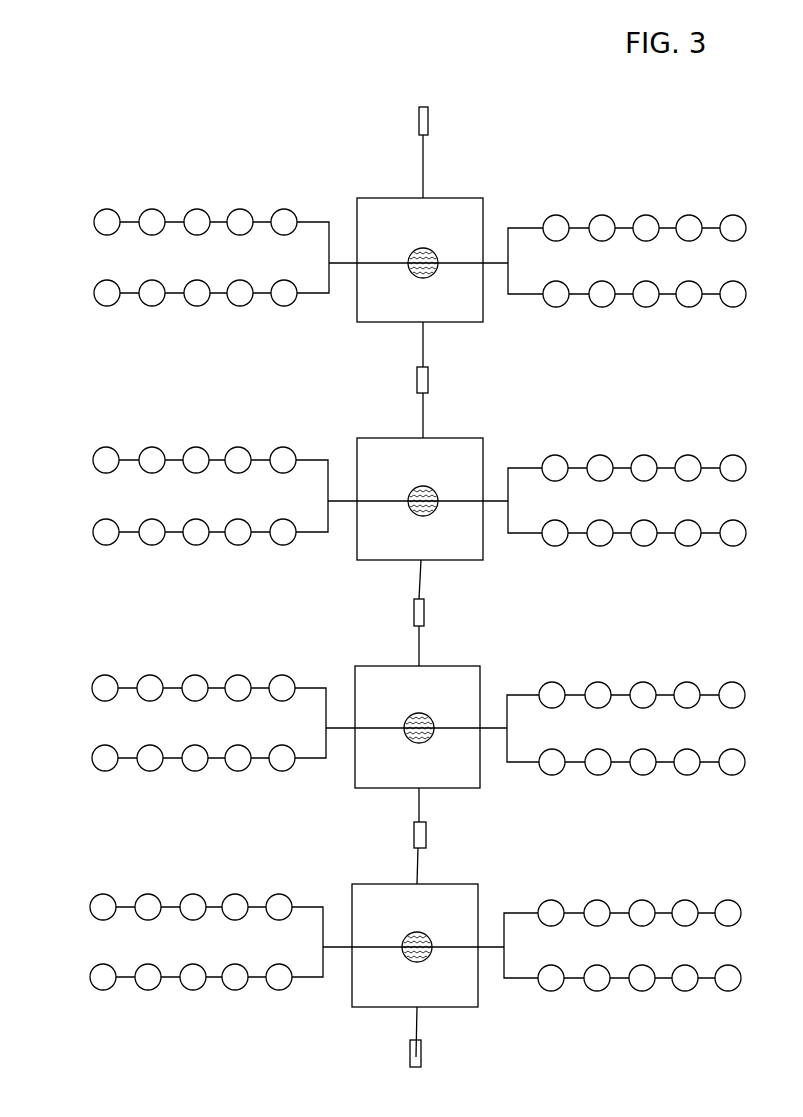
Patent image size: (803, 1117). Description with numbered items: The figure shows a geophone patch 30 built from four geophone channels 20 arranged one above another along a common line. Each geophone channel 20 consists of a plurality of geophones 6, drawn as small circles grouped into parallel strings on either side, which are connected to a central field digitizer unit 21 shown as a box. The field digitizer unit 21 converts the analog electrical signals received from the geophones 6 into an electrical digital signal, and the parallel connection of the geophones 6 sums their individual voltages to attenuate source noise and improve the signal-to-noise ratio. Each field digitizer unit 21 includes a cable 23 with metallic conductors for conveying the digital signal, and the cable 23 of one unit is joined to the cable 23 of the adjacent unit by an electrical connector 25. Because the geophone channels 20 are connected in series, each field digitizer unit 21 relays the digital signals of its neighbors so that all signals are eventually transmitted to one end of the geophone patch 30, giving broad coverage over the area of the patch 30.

The geophone 6 is at (283, 209).
The geophone channel 20 is at (515, 170).
The field digitizer unit 21 is at (388, 198).
The cable 23 is at (423, 181).
The electrical connector 25 is at (419, 124).
The geophone patch 30 is at (153, 86).